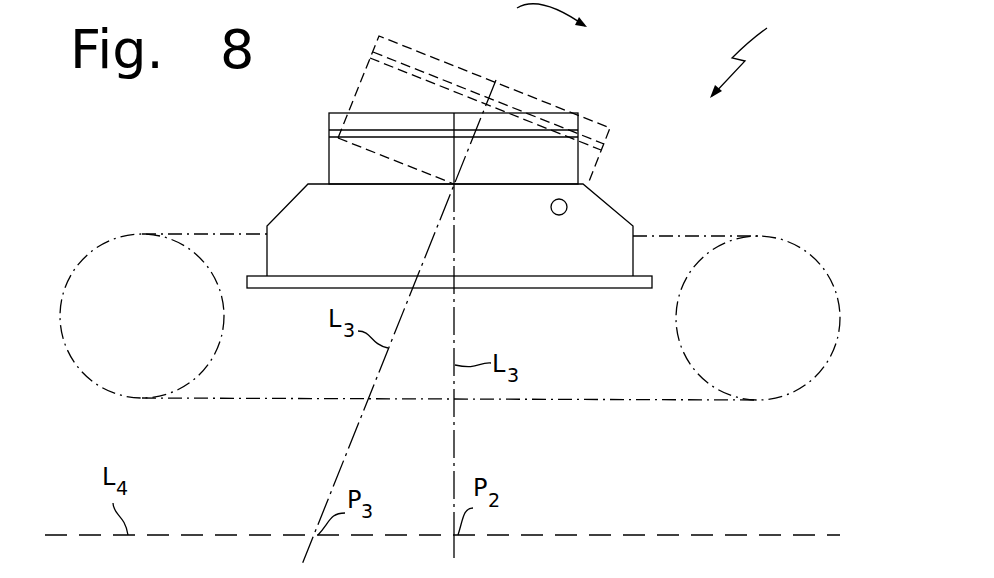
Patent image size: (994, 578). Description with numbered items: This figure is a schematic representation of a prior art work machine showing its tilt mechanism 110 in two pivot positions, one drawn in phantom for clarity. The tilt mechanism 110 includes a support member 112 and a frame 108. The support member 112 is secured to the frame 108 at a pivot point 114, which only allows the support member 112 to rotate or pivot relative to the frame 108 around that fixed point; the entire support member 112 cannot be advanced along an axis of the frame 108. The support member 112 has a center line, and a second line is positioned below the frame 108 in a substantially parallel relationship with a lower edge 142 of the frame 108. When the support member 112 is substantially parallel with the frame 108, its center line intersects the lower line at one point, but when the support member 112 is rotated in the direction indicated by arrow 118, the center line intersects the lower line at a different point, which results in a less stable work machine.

The frame 108 is at (588, 289).
The tilt mechanism 110 is at (758, 56).
The support member 112 is at (339, 120).
The pivot point 114 is at (582, 210).
The arrow 118 is at (546, 10).
The lower edge 142 is at (282, 289).